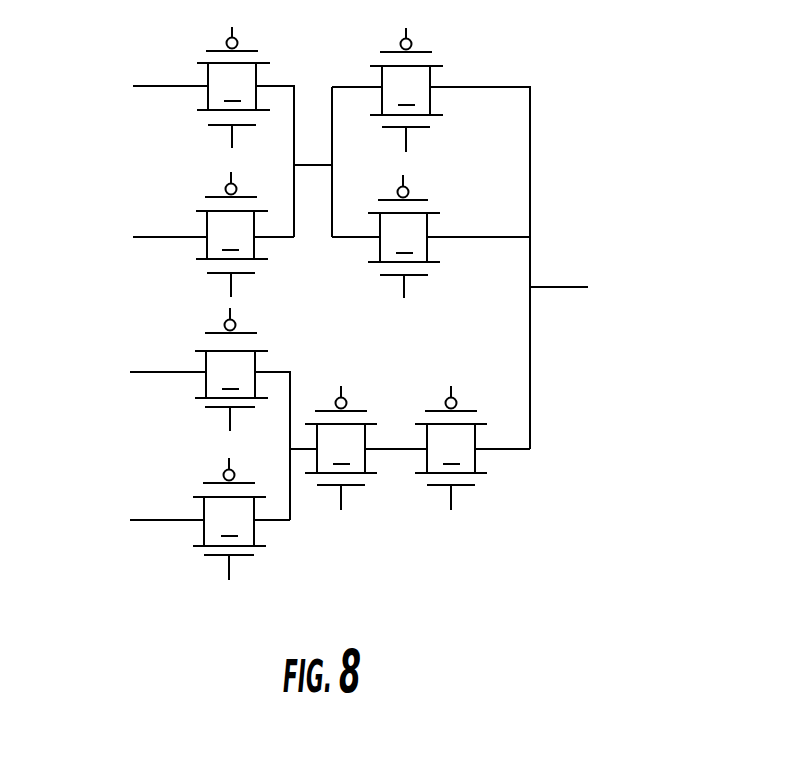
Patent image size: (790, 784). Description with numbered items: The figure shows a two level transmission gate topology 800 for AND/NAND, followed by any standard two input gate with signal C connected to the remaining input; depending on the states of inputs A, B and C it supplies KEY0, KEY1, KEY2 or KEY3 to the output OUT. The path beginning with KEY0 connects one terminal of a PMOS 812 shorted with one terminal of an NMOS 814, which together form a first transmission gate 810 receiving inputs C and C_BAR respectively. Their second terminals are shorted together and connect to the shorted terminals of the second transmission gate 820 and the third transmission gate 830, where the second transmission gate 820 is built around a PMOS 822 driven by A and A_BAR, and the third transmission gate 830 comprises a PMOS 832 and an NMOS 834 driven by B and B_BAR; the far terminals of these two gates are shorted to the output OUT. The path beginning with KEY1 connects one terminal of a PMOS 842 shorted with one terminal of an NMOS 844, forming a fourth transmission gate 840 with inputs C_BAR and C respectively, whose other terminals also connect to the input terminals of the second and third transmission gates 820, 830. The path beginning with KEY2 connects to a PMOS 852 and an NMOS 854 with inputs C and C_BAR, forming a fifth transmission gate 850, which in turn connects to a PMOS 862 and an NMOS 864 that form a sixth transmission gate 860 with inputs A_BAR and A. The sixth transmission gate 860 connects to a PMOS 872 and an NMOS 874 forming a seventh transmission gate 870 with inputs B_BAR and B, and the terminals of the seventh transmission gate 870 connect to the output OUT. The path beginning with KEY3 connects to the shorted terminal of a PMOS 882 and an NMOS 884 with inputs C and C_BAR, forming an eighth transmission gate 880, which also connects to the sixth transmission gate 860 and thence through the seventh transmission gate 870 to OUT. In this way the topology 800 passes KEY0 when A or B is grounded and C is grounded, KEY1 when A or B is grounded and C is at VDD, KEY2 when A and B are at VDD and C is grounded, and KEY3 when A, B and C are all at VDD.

The two level transmission gate topology 800 is at (627, 171).
The first transmission gate 810 is at (258, 80).
The PMOS 812 is at (205, 53).
The NMOS 814 is at (205, 116).
The second transmission gate 820 is at (432, 82).
The PMOS 822 is at (417, 51).
The third transmission gate 830 is at (430, 228).
The PMOS 832 is at (425, 205).
The NMOS 834 is at (430, 263).
The fourth transmission gate 840 is at (205, 248).
The PMOS 842 is at (205, 211).
The NMOS 844 is at (213, 275).
The fifth transmission gate 850 is at (257, 362).
The PMOS 852 is at (200, 351).
The NMOS 854 is at (211, 408).
The sixth transmission gate 860 is at (365, 470).
The PMOS 862 is at (360, 412).
The NMOS 864 is at (321, 479).
The seventh transmission gate 870 is at (478, 468).
The PMOS 872 is at (470, 416).
The NMOS 874 is at (470, 490).
The eighth transmission gate 880 is at (205, 530).
The PMOS 882 is at (200, 497).
The NMOS 884 is at (205, 556).